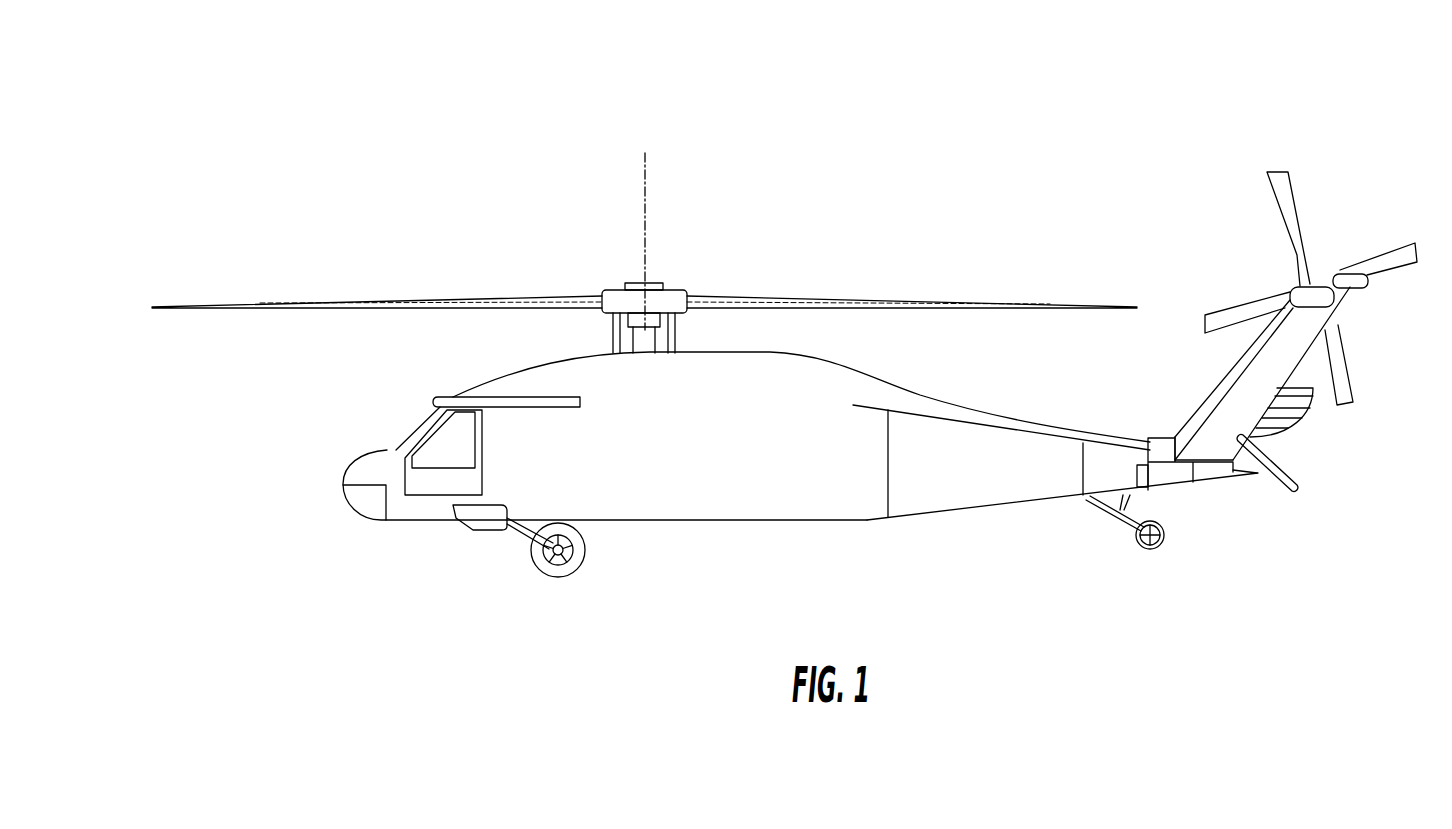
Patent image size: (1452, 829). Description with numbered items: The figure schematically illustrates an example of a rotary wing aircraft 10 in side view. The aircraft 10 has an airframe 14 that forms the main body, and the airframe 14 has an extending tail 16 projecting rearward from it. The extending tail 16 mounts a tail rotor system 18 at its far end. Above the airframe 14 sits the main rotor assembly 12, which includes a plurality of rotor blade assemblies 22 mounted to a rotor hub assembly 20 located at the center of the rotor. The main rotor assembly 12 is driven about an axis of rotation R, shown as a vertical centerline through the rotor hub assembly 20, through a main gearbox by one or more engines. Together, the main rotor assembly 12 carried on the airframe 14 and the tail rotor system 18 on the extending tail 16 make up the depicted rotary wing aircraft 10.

The rotary wing aircraft 10 is at (260, 203).
The main rotor assembly 12 is at (736, 231).
The airframe 14 is at (738, 478).
The extending tail 16 is at (1047, 493).
The tail rotor system 18 is at (1219, 241).
The rotor hub assembly 20 is at (615, 289).
The rotor blade assemblies 22 is at (452, 298).
The axis of rotation R is at (647, 187).